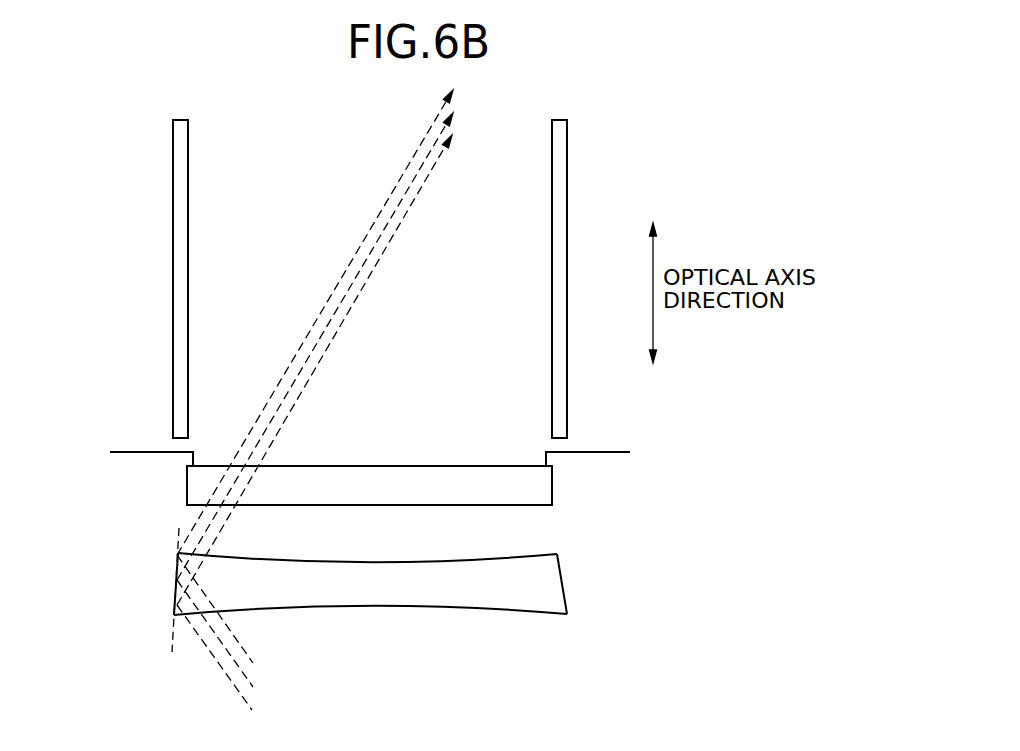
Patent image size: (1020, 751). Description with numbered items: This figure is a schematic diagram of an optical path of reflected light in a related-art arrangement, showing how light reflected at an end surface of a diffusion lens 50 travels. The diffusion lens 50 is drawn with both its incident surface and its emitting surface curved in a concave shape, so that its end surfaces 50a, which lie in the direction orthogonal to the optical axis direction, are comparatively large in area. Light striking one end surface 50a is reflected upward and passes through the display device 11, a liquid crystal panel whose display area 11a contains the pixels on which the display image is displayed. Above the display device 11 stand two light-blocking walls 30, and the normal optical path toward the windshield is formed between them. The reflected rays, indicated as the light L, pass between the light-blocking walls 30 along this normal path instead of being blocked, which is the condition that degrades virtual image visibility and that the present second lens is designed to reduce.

The light-blocking wall 30 is at (160, 190).
The display device 11 is at (570, 488).
The display area 11a is at (513, 506).
The diffusion lens 50 is at (587, 574).
The end surface 50a is at (177, 583).
The display light L is at (396, 187).